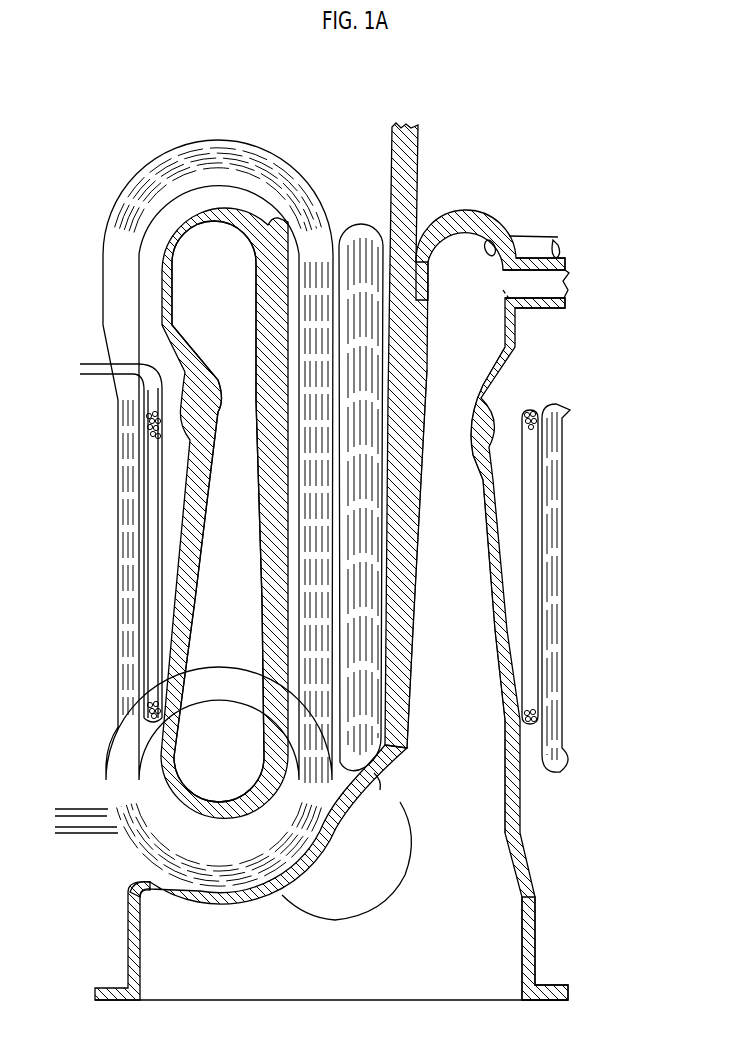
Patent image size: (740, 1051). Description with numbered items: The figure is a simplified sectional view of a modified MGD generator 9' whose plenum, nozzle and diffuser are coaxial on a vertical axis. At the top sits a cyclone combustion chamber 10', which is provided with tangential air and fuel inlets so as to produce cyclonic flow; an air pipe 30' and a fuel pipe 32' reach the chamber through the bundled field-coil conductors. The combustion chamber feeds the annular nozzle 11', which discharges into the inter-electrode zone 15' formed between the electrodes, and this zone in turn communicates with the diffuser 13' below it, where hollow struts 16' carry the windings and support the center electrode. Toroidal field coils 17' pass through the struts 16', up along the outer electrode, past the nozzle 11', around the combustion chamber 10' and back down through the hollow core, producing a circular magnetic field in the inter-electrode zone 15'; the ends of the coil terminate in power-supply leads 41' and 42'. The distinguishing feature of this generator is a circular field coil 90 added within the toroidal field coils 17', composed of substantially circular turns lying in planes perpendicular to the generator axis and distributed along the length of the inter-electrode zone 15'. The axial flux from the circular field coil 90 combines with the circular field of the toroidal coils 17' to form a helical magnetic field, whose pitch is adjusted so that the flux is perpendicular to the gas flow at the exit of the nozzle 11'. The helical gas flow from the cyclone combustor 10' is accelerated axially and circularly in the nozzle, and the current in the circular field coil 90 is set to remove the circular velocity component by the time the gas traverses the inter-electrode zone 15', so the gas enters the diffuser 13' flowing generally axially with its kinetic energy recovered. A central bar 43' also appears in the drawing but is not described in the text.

The generator 9' is at (198, 513).
The cyclone combustion chamber 10' is at (368, 500).
The nozzle 11' is at (364, 604).
The diffuser 13' is at (331, 941).
The inter-electrode zone 15' is at (456, 590).
The hollow strut 16' is at (291, 844).
The toroidal field coil 17' is at (455, 498).
The air pipe 30' is at (510, 285).
The fuel pipe 32' is at (554, 267).
The power-supply lead 41' is at (70, 798).
The power-supply lead 42' is at (75, 845).
The central bar 43' is at (386, 435).
The circular field coil 90 is at (157, 458).